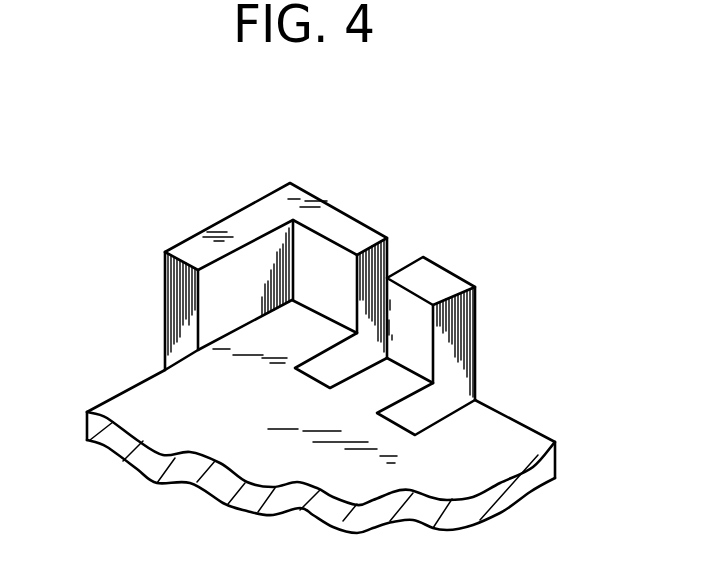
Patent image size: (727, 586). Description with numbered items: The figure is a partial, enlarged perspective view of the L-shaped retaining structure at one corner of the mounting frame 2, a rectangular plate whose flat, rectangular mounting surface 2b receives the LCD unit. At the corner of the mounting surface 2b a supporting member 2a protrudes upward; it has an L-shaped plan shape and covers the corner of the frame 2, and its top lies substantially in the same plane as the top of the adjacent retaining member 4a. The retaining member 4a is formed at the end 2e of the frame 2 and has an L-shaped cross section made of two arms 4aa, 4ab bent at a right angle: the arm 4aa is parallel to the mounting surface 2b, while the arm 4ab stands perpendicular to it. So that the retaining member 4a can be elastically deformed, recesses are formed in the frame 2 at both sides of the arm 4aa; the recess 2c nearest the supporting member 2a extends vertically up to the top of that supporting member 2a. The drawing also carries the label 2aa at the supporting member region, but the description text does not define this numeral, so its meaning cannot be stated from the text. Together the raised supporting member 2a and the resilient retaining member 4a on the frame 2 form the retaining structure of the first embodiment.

The mounting frame 2 is at (517, 484).
The supporting member 2a is at (336, 230).
The groove 2aa is at (250, 258).
The mounting surface 2b is at (153, 408).
The recess 2c is at (327, 371).
The end of the frame 2e is at (522, 420).
The retaining member 4a is at (431, 286).
The arm 4aa is at (388, 388).
The arm 4ab is at (408, 315).